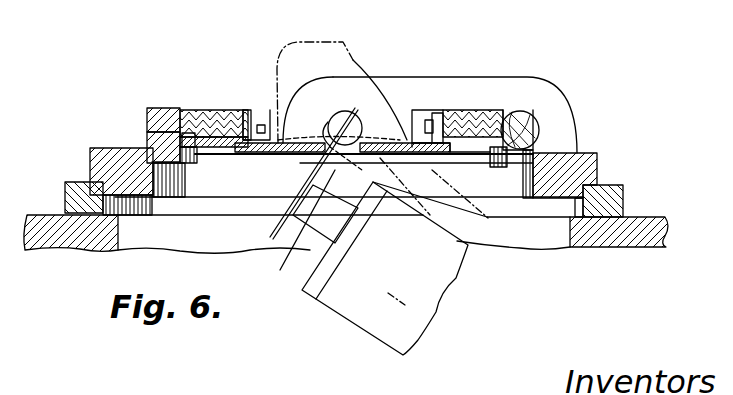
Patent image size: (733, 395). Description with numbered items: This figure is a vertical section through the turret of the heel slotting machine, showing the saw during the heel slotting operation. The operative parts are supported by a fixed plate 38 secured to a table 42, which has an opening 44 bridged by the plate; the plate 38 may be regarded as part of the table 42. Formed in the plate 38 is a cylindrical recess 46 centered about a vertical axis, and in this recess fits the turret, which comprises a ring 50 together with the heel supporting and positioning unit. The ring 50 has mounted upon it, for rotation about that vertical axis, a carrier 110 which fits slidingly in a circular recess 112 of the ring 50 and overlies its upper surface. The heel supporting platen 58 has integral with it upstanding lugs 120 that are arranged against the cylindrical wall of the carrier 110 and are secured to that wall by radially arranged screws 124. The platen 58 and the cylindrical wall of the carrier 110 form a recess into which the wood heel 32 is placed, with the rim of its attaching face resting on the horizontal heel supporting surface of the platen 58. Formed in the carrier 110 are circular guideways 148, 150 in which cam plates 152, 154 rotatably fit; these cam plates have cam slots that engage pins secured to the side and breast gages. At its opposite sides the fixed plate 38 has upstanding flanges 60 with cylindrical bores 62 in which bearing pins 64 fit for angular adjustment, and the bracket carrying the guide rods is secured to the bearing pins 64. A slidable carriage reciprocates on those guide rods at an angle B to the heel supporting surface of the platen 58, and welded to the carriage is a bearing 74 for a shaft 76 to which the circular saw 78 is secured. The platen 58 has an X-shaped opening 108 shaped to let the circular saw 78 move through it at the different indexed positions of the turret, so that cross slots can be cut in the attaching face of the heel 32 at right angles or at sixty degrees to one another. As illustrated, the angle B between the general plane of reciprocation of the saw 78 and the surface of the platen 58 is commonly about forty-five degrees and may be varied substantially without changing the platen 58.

The wood heel 32 is at (295, 183).
The fixed plate 38 is at (617, 185).
The table 42 is at (657, 225).
The opening 44 is at (120, 233).
The cylindrical recess 46 is at (575, 210).
The ring 50 is at (110, 160).
The heel supporting platen 58 is at (185, 160).
The upstanding flanges 60 is at (433, 83).
The cylindrical bores 62 is at (328, 150).
The bearing pins 64 is at (337, 118).
The bearing 74 is at (403, 360).
The shaft 76 is at (300, 250).
The circular saw 78 is at (268, 238).
The X-shaped opening 108 is at (292, 152).
The carrier 110 is at (157, 113).
The circular recess 112 is at (540, 144).
The upstanding lugs 120 is at (258, 118).
The radially arranged screws 124 is at (257, 108).
The circular guideway 148 is at (187, 110).
The circular guideway 150 is at (192, 133).
The cam plate 152 is at (188, 128).
The cam plate 154 is at (197, 155).
The angle B is at (379, 87).